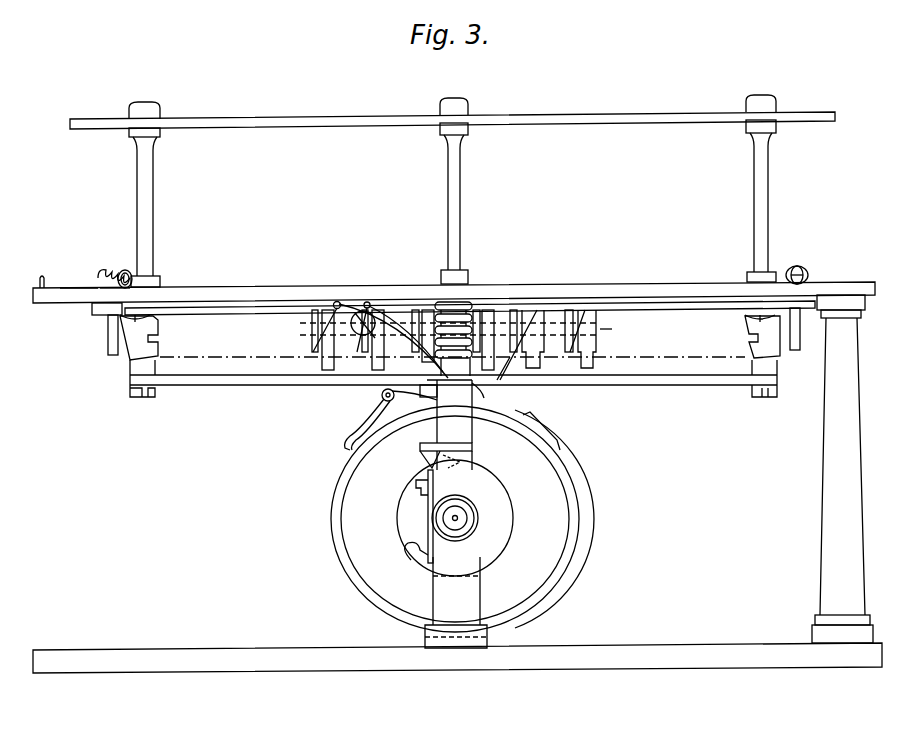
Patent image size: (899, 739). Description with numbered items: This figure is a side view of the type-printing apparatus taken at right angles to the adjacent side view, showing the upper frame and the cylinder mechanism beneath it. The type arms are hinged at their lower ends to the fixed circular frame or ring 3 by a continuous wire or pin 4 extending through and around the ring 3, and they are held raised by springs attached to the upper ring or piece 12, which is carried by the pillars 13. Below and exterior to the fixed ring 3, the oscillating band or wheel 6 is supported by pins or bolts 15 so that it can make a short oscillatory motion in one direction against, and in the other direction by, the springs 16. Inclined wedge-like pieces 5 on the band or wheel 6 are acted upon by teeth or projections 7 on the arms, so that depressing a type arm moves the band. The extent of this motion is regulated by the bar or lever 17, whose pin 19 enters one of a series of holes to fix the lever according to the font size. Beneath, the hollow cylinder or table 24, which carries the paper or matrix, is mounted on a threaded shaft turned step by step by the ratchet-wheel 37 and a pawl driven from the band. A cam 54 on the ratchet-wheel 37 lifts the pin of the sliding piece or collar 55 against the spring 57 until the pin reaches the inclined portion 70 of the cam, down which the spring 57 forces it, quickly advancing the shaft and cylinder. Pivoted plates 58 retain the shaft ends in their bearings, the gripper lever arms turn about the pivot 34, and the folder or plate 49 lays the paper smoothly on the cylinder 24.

The circular frame or ring 3 is at (284, 294).
The continuous wire or pin 4 is at (456, 342).
The inclined wedge-like pieces 5 is at (106, 344).
The oscillating band or wheel 6 is at (104, 312).
The teeth or projections 7 is at (541, 345).
The ring or piece 12 is at (356, 120).
The pillars 13 is at (464, 191).
The pins or bolts 15 is at (152, 318).
The springs 16 is at (118, 274).
The bar or lever 17 is at (84, 288).
The pin 19 is at (38, 282).
The hollow cylinder or table 24 is at (453, 514).
The pivot 34 is at (400, 351).
The ratchet-wheel 37 is at (462, 519).
The folder or plate 49 is at (380, 399).
The cam 54 is at (462, 518).
The sliding piece or collar 55 is at (440, 440).
The spring 57 is at (462, 318).
The pivoted plates 58 is at (428, 532).
The inclined portion 70 is at (470, 462).